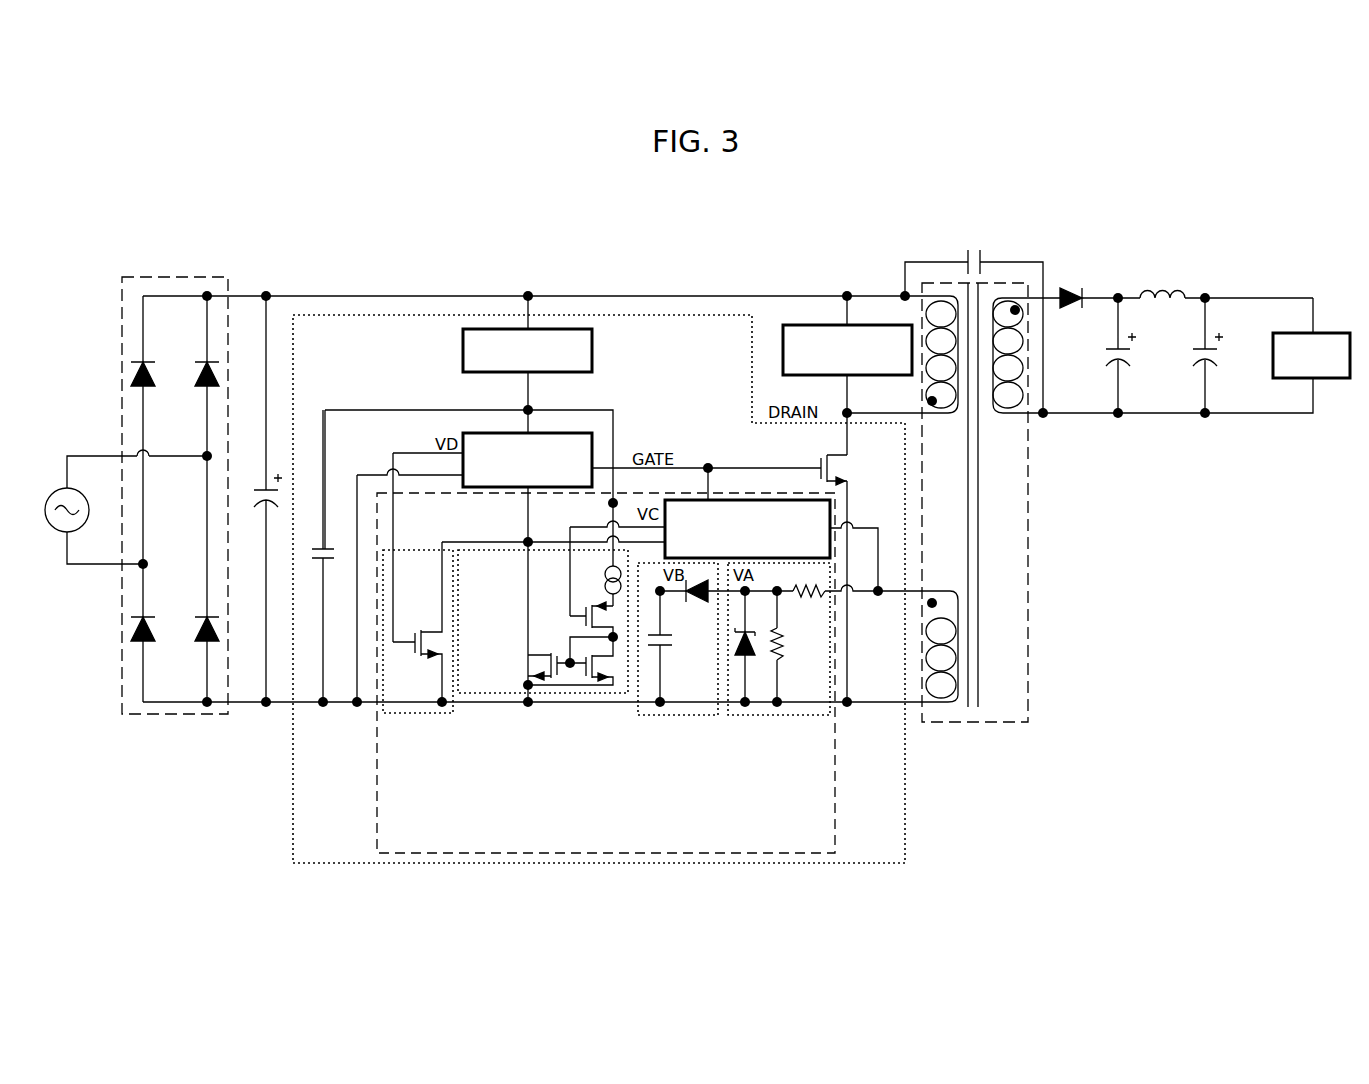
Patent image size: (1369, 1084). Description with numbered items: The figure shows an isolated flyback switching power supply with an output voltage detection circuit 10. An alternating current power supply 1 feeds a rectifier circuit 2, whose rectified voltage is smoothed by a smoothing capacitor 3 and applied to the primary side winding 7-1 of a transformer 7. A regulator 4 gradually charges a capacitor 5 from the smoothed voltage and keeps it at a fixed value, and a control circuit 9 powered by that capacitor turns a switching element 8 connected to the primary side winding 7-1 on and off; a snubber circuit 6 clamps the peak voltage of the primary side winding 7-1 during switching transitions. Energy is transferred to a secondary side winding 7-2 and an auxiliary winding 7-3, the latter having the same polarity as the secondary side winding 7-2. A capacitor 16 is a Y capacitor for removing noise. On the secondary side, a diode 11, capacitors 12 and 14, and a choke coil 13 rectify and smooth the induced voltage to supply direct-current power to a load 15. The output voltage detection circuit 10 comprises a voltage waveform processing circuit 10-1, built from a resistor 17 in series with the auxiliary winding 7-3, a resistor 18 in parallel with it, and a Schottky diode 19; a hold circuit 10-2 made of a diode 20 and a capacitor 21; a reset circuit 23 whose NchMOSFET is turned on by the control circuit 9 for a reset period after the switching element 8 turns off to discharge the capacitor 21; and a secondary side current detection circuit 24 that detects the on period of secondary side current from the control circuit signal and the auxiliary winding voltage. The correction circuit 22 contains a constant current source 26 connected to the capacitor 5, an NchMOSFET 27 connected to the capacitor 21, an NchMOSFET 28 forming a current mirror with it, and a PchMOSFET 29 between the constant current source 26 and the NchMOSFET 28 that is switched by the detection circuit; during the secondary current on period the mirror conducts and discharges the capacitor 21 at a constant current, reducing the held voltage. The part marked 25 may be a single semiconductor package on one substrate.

The alternating current power supply 1 is at (54, 488).
The rectifier circuit 2 is at (176, 273).
The smoothing capacitor 3 is at (251, 490).
The regulator 4 is at (593, 349).
The capacitor 5 is at (317, 548).
The snubber circuit 6 is at (781, 351).
The transformer 7 is at (945, 527).
The primary side winding 7-1 is at (943, 425).
The secondary side winding 7-2 is at (1004, 422).
The auxiliary winding 7-3 is at (942, 585).
The switching element 8 is at (814, 463).
The control circuit 9 is at (592, 433).
The output voltage detection circuit 10 is at (373, 824).
The voltage waveform processing circuit 10-1 is at (742, 675).
The hold circuit 10-2 is at (638, 691).
The diode 11 is at (1073, 288).
The capacitor 12 is at (1100, 358).
The choke coil 13 is at (1157, 290).
The capacitor 14 is at (1222, 358).
The load 15 is at (1321, 332).
The capacitor 16 is at (958, 253).
The resistor 17 is at (812, 602).
The resistor 18 is at (787, 645).
The Schottky diode 19 is at (755, 645).
The diode 20 is at (695, 602).
The capacitor 21 is at (675, 645).
The correction circuit 22 is at (472, 550).
The reset circuit 23 is at (450, 712).
The secondary side current detection circuit 24 is at (832, 508).
The semiconductor package 25 is at (290, 766).
The constant current source 26 is at (602, 584).
The NchMOSFET 27 is at (533, 667).
The NchMOSFET 28 is at (595, 667).
The PchMOSFET 29 is at (595, 617).